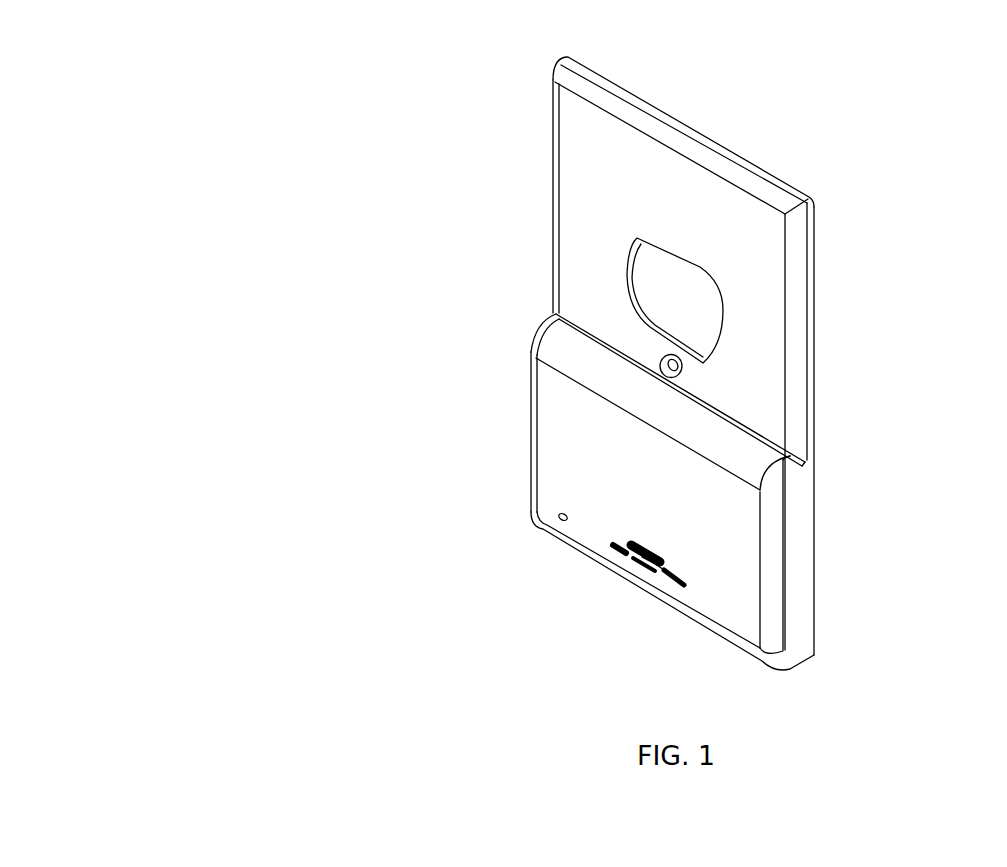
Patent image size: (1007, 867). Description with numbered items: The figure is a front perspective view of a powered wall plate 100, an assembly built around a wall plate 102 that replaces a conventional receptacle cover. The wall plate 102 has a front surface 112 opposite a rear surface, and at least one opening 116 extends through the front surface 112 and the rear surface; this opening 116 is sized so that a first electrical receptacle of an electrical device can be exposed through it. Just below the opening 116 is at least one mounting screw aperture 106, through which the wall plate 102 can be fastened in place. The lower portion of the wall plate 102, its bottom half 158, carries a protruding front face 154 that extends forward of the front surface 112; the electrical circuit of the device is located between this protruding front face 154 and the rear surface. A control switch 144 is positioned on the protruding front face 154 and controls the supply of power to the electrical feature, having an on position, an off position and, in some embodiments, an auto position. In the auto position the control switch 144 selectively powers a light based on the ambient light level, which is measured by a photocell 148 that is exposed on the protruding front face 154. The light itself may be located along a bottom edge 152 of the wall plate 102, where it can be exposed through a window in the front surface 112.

The powered wall plate 100 is at (408, 265).
The wall plate 102 is at (669, 188).
The mounting screw aperture 106 is at (661, 367).
The front surface 112 is at (767, 337).
The opening 116 is at (695, 295).
The control switch 144 is at (640, 569).
The photocell 148 is at (558, 516).
The bottom edge 152 is at (687, 622).
The protruding front face 154 is at (730, 519).
The bottom half 158 is at (790, 627).